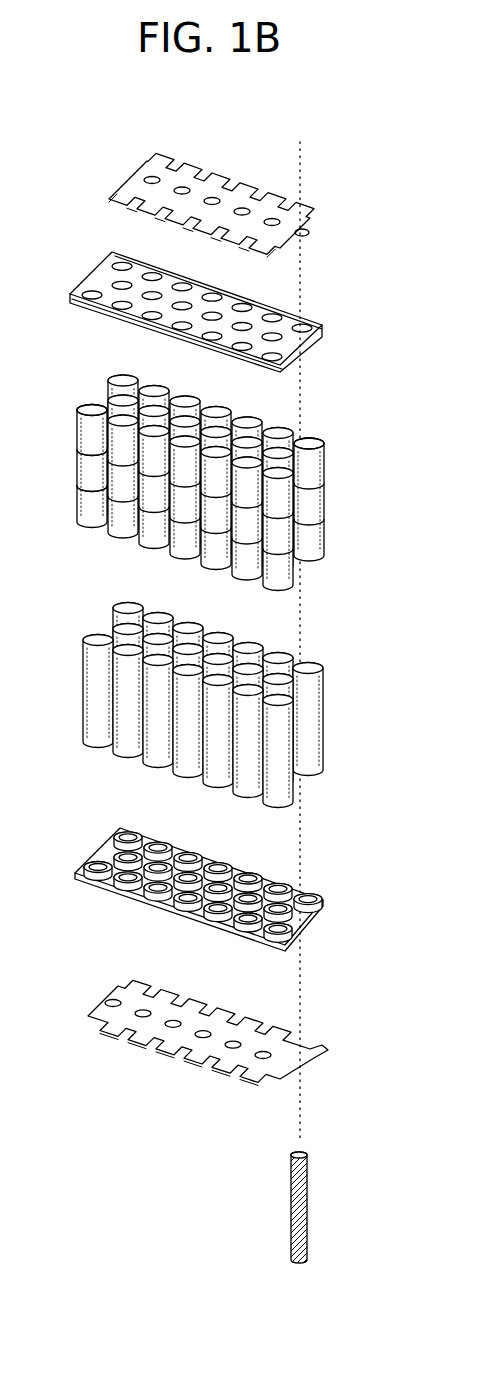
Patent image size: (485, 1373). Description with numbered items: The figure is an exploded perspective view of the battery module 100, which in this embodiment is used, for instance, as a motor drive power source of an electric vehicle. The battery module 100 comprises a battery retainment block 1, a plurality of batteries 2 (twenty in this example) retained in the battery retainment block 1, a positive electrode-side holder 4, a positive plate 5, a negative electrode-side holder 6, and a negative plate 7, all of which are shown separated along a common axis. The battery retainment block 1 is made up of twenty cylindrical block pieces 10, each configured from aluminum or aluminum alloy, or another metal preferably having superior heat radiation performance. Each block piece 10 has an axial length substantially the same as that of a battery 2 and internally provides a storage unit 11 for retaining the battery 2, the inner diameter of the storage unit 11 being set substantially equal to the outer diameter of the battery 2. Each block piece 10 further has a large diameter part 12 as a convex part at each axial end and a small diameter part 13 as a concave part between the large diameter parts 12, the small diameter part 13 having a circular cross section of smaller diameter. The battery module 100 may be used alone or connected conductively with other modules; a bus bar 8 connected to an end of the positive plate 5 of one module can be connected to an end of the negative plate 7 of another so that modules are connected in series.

The battery retainment block 1 is at (211, 474).
The battery 2 is at (258, 645).
The positive electrode-side holder 4 is at (323, 322).
The positive plate 5 is at (308, 211).
The negative electrode-side holder 6 is at (327, 900).
The negative plate 7 is at (326, 1048).
The bus bar 8 is at (307, 1198).
The block piece 10 is at (120, 380).
The storage unit 11 is at (85, 408).
The large diameter part 12 is at (86, 437).
The small diameter part 13 is at (86, 463).
The battery module 100 is at (344, 398).